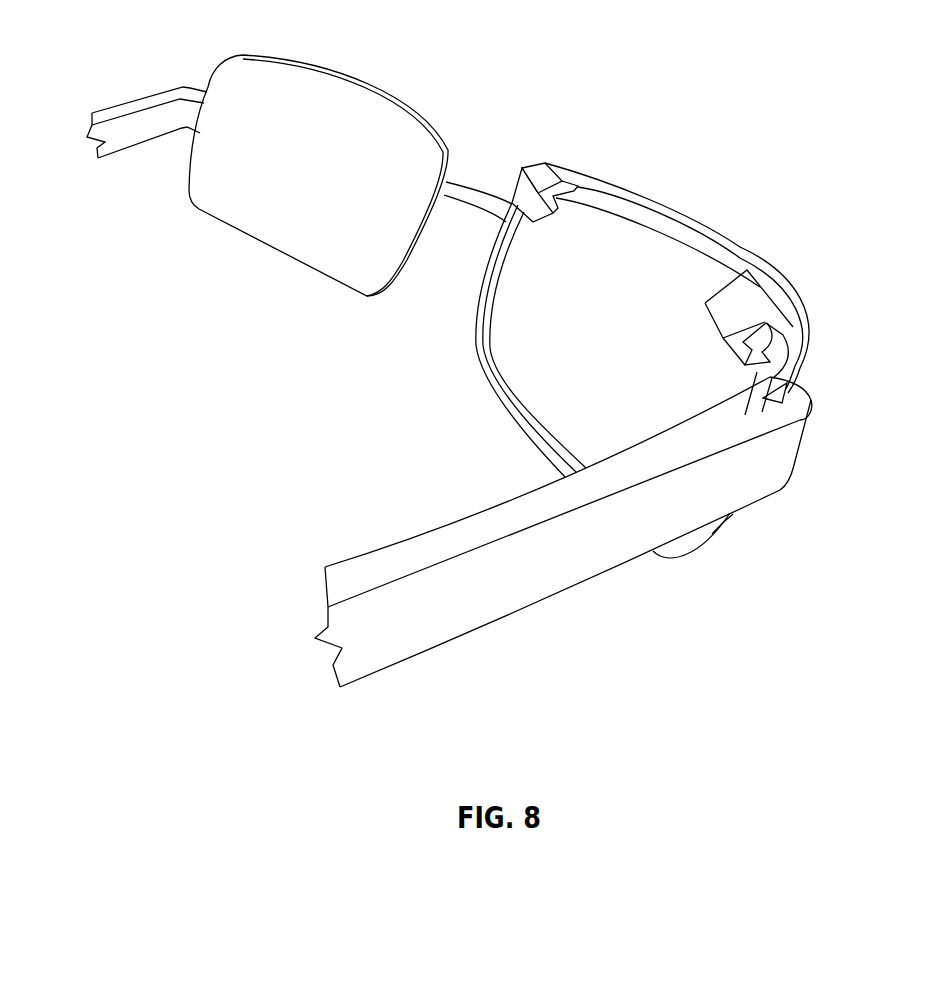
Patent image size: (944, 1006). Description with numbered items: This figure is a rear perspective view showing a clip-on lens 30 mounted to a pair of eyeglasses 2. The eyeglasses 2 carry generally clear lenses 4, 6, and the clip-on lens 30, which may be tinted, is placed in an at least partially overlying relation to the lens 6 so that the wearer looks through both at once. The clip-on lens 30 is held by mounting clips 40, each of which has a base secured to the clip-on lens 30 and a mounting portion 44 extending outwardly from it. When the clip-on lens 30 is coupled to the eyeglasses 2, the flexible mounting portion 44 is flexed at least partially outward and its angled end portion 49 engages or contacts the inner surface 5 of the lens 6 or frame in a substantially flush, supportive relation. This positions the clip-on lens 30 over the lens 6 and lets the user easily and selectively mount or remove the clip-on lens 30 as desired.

The eyeglasses 2 is at (378, 632).
The lens 4 is at (367, 80).
The inner surface 5 is at (325, 190).
The lens 6 is at (477, 352).
The clip-on lens 30 is at (685, 213).
The mounting clip 40 is at (674, 235).
The mounting portion 44 is at (720, 305).
The end portion 49 is at (557, 212).